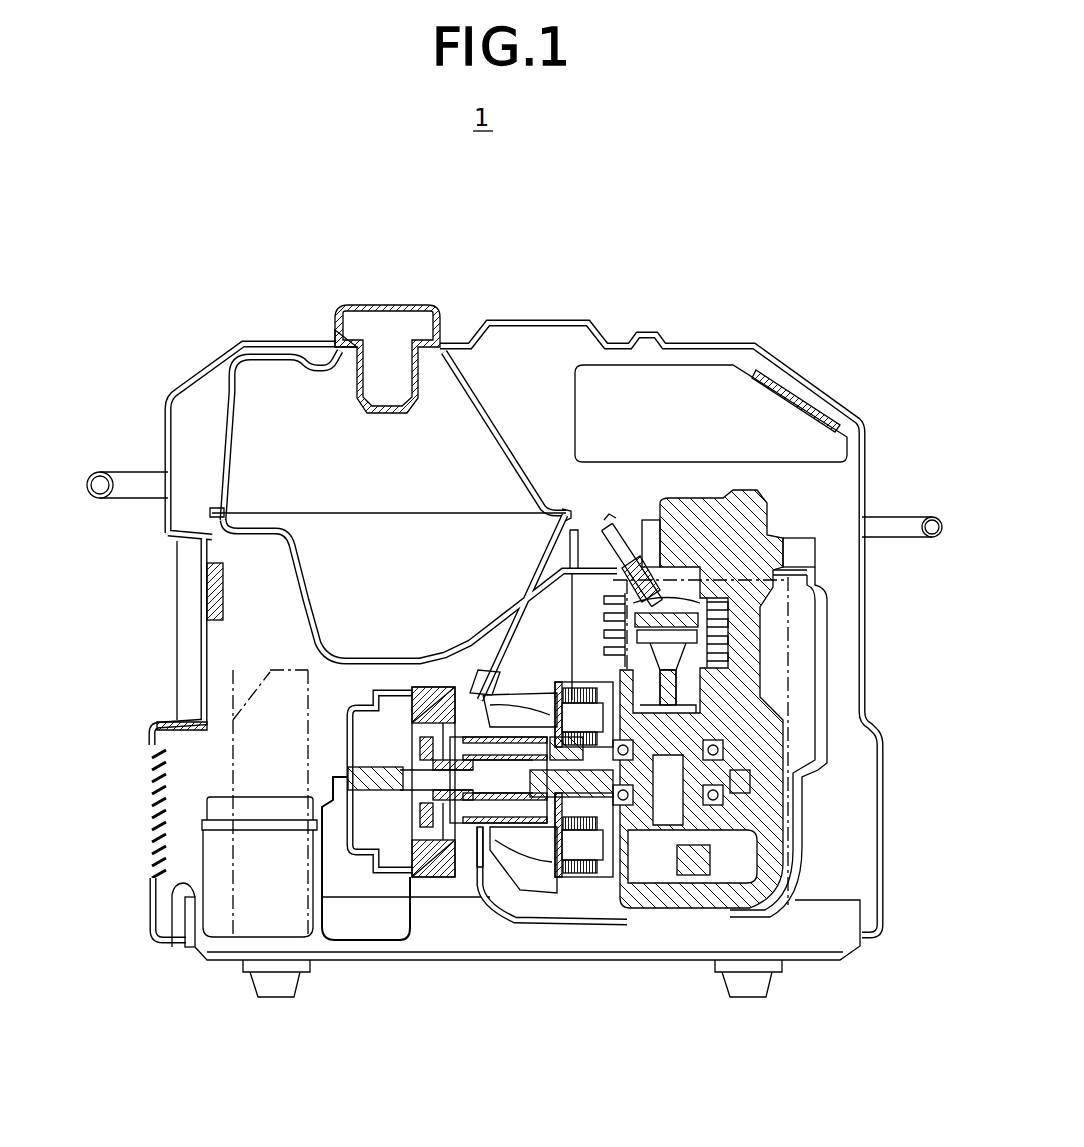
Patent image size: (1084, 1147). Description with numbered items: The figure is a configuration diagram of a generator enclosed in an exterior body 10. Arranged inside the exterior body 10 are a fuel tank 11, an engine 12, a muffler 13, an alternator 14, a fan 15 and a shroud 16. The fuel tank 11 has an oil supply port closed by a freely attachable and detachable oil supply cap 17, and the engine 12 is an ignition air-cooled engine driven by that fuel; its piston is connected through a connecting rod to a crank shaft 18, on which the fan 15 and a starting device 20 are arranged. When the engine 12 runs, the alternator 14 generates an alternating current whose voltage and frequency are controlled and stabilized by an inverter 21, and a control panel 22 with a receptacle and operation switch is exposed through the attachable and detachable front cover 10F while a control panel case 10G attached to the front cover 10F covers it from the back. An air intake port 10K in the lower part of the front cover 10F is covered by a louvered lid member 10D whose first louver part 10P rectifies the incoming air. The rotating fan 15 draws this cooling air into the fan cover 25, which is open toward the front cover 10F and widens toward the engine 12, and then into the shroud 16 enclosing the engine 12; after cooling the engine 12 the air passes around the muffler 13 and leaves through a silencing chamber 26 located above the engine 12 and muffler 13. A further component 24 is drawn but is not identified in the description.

The exterior body 10 is at (808, 378).
The front cover 10F is at (165, 395).
The control panel case 10G is at (310, 573).
The lid member 10D is at (148, 805).
The first louver part 10P is at (155, 875).
The air intake port 10K is at (178, 890).
The fuel tank 11 is at (228, 395).
The engine 12 is at (762, 486).
The muffler 13 is at (792, 642).
The alternator 14 is at (578, 855).
The fan 15 is at (530, 850).
The shroud 16 is at (595, 585).
The oil supply cap 17 is at (375, 305).
The crank shaft 18 is at (603, 785).
The starting device 20 is at (385, 870).
The inverter 21 is at (230, 762).
The control panel 22 is at (205, 600).
The accumulator 24 is at (222, 920).
The fan cover 25 is at (523, 610).
The silencing chamber 26 is at (716, 393).